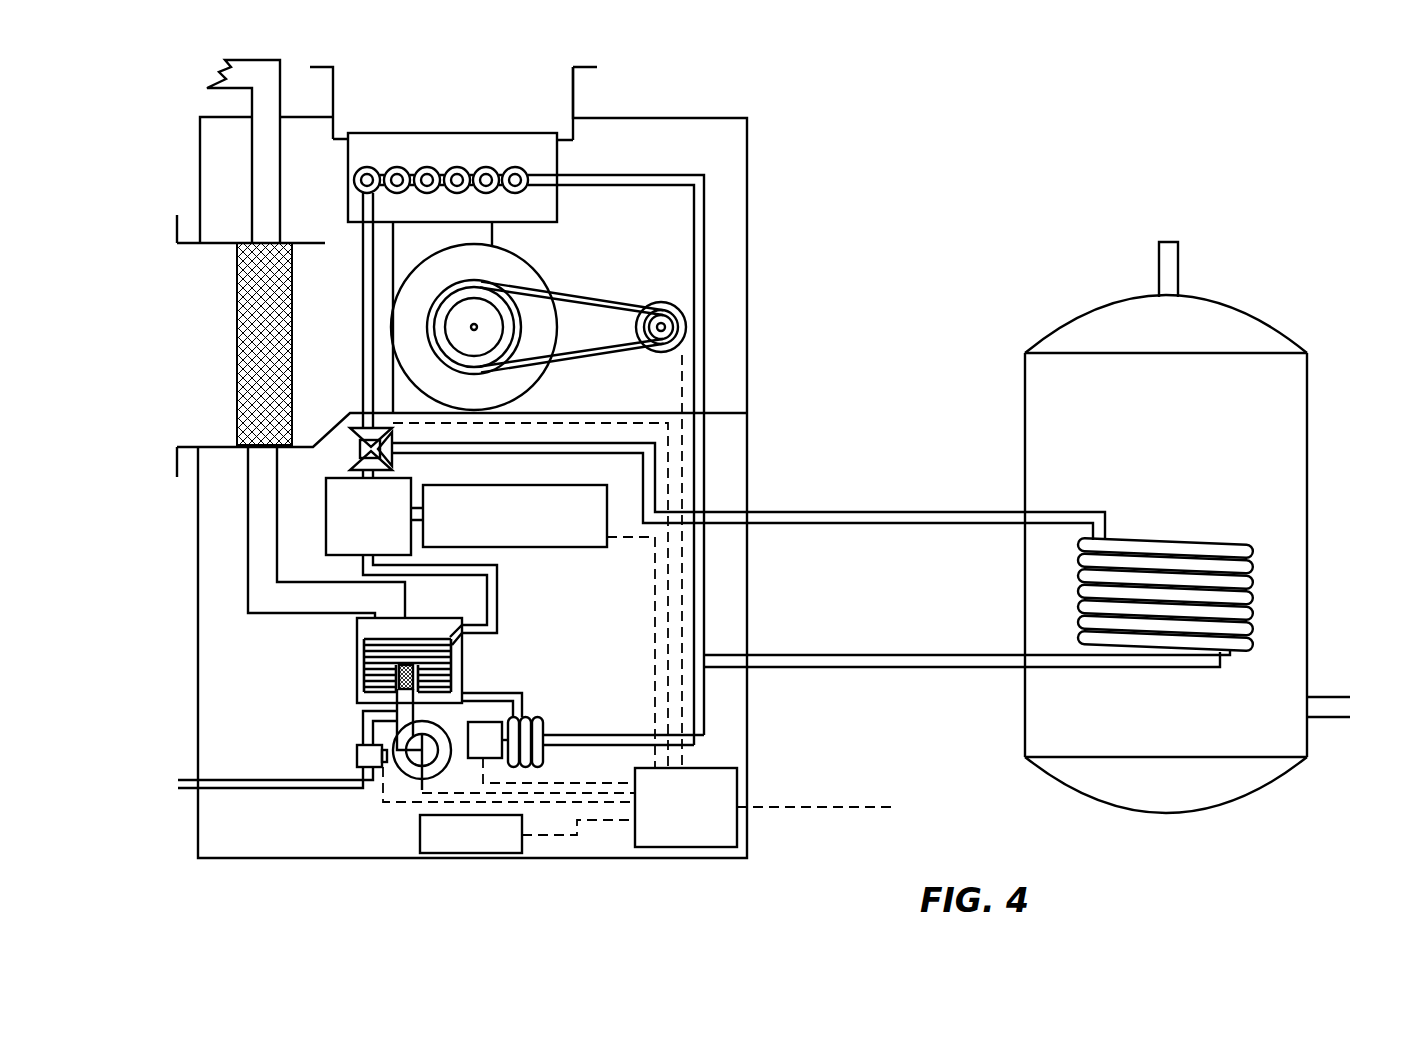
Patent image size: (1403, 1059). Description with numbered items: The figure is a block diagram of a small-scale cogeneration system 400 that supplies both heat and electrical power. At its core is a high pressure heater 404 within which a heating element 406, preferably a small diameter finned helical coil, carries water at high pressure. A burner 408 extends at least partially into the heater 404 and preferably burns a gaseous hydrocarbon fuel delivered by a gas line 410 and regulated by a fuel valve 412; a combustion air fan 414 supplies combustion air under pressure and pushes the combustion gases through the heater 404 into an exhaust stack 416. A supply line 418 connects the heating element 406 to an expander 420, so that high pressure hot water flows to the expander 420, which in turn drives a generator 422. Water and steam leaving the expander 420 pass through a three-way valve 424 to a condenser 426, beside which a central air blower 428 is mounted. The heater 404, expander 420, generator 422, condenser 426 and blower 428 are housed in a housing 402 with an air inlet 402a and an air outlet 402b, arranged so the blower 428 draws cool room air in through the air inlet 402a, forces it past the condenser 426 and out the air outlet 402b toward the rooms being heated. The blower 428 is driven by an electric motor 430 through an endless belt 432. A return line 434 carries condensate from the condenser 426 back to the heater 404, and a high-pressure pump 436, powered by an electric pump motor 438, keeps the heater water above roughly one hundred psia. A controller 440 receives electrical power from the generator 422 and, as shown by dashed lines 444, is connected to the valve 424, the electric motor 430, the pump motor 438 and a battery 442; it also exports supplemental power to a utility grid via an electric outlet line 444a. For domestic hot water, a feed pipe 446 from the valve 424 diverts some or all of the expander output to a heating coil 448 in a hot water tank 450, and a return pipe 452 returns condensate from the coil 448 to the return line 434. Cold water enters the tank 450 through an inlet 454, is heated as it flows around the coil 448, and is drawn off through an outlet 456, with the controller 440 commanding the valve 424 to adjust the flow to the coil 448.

The cogeneration system 400 is at (847, 138).
The housing 402 is at (750, 260).
The air inlet 402a is at (192, 243).
The air outlet 402b is at (573, 83).
The high pressure heater 404 is at (357, 650).
The heating element 406 is at (452, 657).
The burner 408 is at (416, 714).
The gas line 410 is at (263, 780).
The fuel valve 412 is at (357, 750).
The combustion air fan 414 is at (405, 777).
The exhaust stack 416 is at (248, 540).
The supply line 418 is at (497, 598).
The expander 420 is at (326, 500).
The generator 422 is at (503, 548).
The three-way valve 424 is at (350, 447).
The condenser 426 is at (350, 174).
The central air blower 428 is at (530, 262).
The electric motor 430 is at (665, 352).
The endless belt 432 is at (593, 296).
The return line 434 is at (710, 378).
The high-pressure pump 436 is at (545, 722).
The electric pump motor 438 is at (512, 706).
The controller 440 is at (705, 847).
The battery 442 is at (420, 848).
The dashed lines 444 is at (645, 759).
The electric outlet line 444a is at (816, 825).
The feed pipe 446 is at (826, 514).
The heating coil 448 is at (1148, 541).
The hot water tank 450 is at (1308, 448).
The return pipe 452 is at (826, 668).
The inlet 454 is at (1330, 697).
The outlet 456 is at (1180, 268).